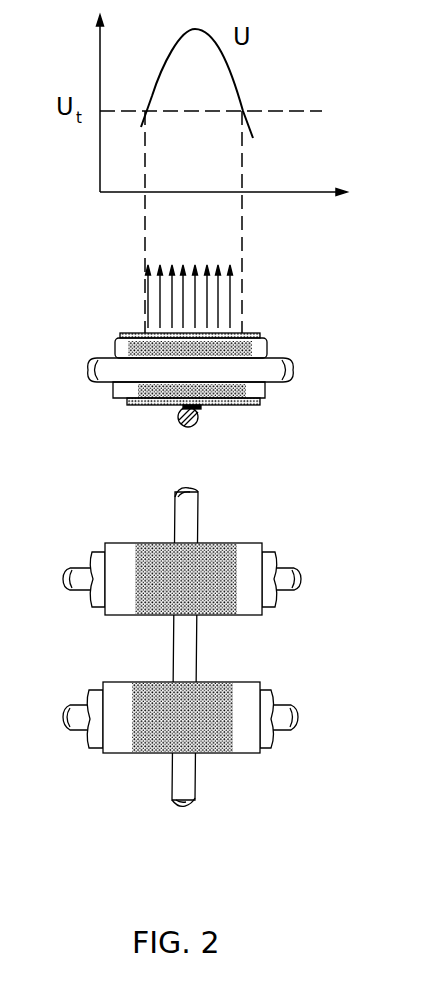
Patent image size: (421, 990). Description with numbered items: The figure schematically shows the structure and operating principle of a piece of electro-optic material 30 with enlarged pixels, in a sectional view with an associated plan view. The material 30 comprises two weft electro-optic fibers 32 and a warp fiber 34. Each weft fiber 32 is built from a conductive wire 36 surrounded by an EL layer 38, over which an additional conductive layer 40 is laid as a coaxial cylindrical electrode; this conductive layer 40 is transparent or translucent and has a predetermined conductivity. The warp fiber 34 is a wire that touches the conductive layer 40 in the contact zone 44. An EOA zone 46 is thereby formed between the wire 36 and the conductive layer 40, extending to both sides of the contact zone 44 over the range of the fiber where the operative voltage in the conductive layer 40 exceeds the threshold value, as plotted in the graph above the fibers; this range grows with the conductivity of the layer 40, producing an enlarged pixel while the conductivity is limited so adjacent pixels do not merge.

The electro-optic material 30 is at (225, 624).
The weft electro-optic fiber 32 is at (213, 628).
The warp fiber 34 is at (192, 427).
The conductive wire 36 is at (290, 371).
The EL layer 38 is at (265, 387).
The conductive layer 40 is at (251, 334).
The contact zone 44 is at (203, 409).
The EOA zone 46 is at (148, 553).